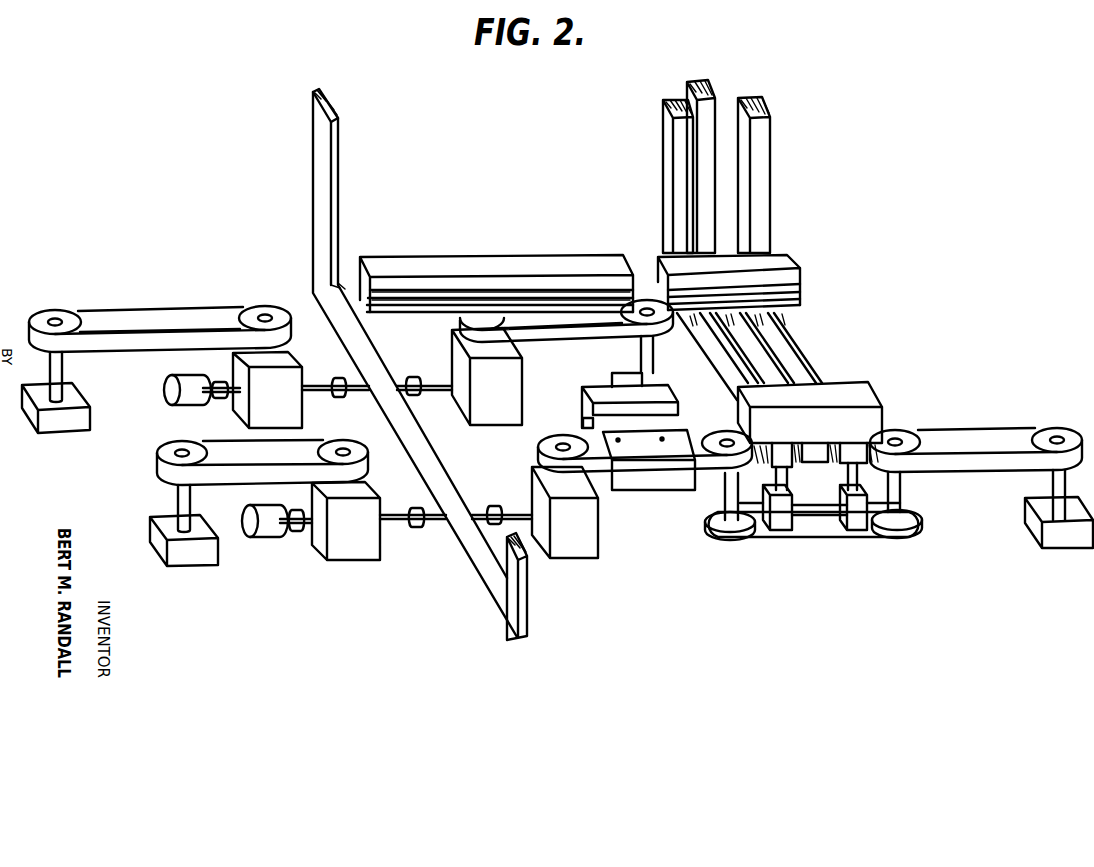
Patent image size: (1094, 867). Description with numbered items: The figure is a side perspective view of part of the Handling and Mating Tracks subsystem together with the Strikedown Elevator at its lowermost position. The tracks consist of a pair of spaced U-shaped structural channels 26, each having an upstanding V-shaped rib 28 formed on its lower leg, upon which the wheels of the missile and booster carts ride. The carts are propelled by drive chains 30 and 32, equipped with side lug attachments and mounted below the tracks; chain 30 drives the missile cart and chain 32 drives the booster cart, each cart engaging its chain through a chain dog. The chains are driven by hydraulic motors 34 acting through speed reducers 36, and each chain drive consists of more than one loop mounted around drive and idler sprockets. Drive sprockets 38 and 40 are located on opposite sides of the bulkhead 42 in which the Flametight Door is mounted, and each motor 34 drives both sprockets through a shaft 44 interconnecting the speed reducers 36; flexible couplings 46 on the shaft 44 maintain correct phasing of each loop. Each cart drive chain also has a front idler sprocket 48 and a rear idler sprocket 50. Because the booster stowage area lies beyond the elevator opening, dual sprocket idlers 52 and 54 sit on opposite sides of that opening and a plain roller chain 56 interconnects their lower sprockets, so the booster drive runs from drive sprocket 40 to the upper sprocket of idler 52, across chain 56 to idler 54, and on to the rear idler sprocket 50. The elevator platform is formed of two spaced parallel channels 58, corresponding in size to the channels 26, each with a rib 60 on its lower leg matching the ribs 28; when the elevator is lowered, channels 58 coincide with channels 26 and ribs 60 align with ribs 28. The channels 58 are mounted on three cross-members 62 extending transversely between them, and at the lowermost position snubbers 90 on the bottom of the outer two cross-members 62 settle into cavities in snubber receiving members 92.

The U-shaped structural channel 26 is at (430, 262).
The V-shaped rib 28 is at (468, 300).
The drive chain 30 is at (150, 290).
The drive chain 32 is at (230, 443).
The hydraulic motor 34 is at (266, 535).
The speed reducer 36 is at (352, 560).
The drive sprocket 38 is at (268, 310).
The drive sprocket 40 is at (542, 454).
The bulkhead 42 is at (312, 168).
The shaft 44 is at (405, 522).
The flexible coupling 46 is at (414, 506).
The front idler sprocket 48 is at (60, 315).
The rear idler sprocket 50 is at (648, 296).
The dual sprocket idler 52 is at (716, 435).
The dual sprocket idler 54 is at (905, 437).
The plain roller chain 56 is at (790, 537).
The elevator platform channel 58 is at (790, 263).
The rib 60 is at (796, 302).
The cross-member 62 is at (804, 345).
The snubber 90 is at (782, 480).
The snubber receiving member 92 is at (855, 522).